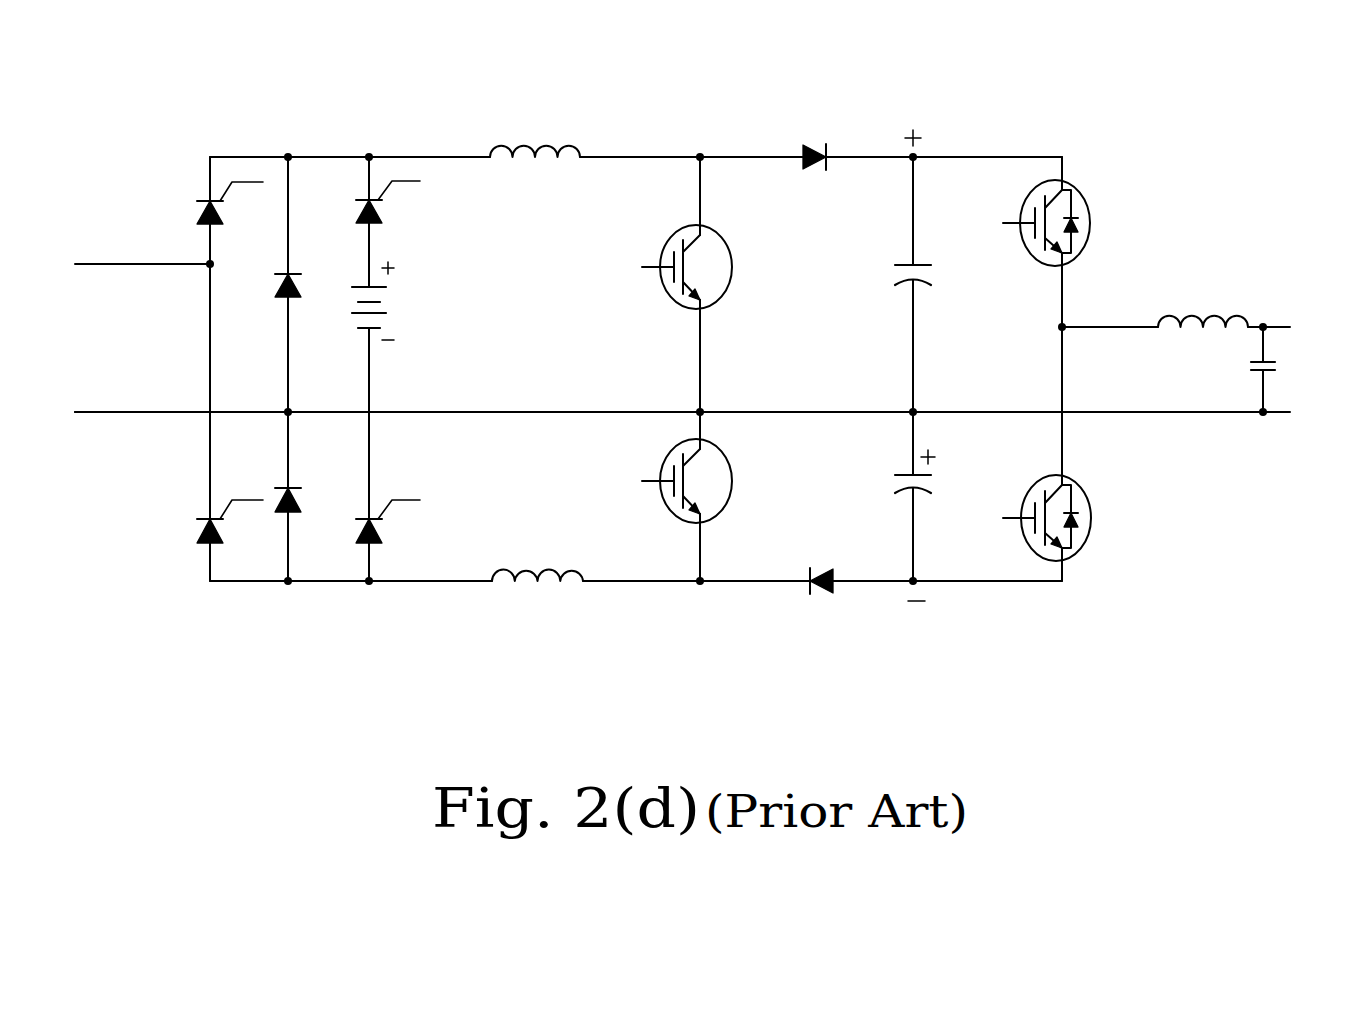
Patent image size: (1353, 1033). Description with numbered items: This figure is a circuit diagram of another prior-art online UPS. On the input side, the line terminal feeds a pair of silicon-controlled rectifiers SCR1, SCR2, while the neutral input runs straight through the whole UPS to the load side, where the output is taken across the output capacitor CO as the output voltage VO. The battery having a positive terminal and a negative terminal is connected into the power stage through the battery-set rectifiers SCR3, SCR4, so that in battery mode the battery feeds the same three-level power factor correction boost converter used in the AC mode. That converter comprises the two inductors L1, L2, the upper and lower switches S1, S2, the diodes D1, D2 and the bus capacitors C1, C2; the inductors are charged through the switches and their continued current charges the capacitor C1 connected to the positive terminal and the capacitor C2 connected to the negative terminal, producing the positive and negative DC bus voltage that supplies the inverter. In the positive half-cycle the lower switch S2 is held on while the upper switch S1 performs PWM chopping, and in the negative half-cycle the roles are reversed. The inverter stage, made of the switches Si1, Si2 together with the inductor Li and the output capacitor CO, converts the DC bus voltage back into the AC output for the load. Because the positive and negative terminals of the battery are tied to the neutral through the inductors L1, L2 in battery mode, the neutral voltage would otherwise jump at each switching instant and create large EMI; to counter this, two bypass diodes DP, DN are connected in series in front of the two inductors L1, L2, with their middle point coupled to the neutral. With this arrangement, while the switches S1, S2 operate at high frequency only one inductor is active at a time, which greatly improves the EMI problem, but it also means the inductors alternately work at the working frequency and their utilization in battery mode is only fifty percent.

The silicon-controlled rectifier SCR1 is at (194, 203).
The silicon-controlled rectifier SCR2 is at (194, 521).
The silicon-controlled rectifier SCR3 is at (418, 202).
The silicon-controlled rectifier SCR4 is at (418, 521).
The bypass diode DP is at (302, 307).
The bypass diode DN is at (302, 520).
The element battery is at (420, 301).
The inductor L1 is at (535, 133).
The inductor L2 is at (537, 556).
The diode D1 is at (814, 137).
The diode D2 is at (822, 559).
The switch S1 is at (705, 267).
The switch S2 is at (706, 481).
The capacitor C1 is at (931, 279).
The capacitor C2 is at (931, 479).
The switch Si1 is at (1069, 223).
The switch Si2 is at (1070, 518).
The inductor Li is at (1203, 303).
The output capacitor CO is at (1245, 366).
The output voltage VO is at (1294, 366).
The element DC bus voltage is at (920, 152).